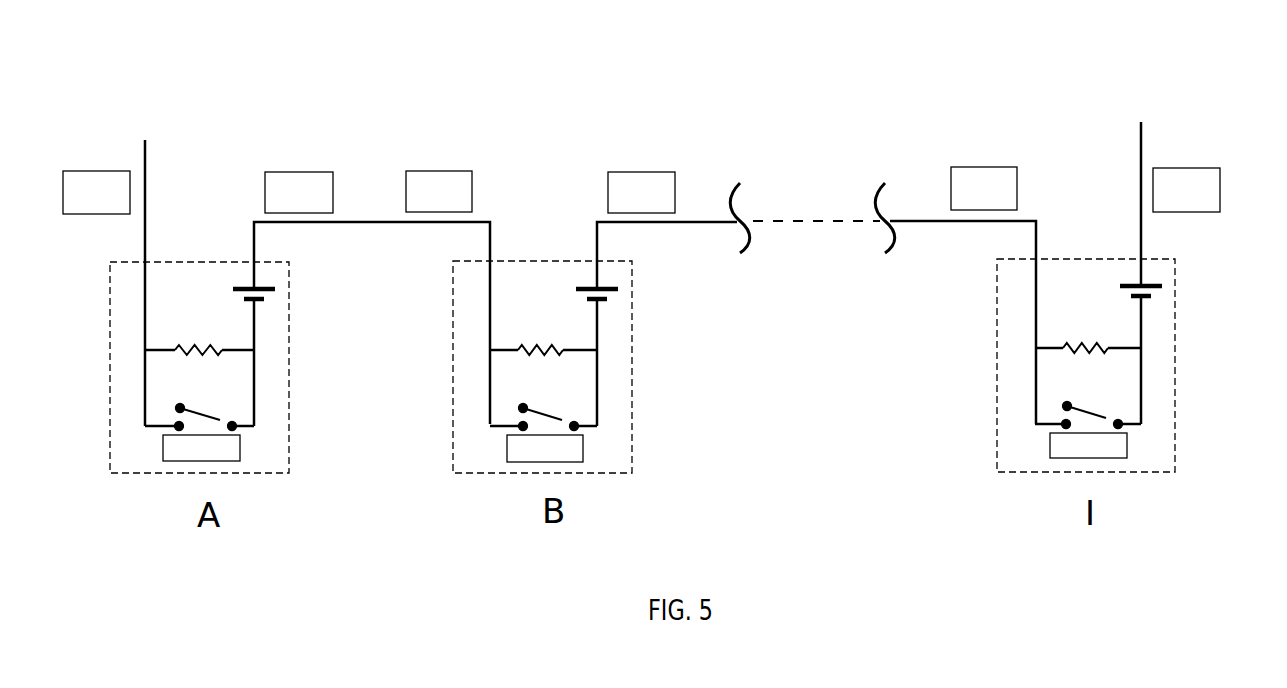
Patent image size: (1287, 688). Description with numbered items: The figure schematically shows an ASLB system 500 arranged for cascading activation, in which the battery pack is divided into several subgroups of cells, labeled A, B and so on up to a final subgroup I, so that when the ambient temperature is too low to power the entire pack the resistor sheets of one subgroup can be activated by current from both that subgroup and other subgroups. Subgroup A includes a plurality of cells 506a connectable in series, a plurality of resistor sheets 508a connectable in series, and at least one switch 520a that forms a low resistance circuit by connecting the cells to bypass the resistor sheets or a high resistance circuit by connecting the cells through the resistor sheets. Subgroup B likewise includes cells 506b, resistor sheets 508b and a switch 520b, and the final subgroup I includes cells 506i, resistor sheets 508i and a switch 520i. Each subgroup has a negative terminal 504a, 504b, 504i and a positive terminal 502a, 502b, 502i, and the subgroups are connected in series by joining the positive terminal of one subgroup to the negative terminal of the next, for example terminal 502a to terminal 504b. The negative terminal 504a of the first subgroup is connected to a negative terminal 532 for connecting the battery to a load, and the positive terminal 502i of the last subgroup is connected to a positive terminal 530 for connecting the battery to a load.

The ASLB system 500 is at (430, 85).
The positive terminal of subgroup A 502a is at (298, 175).
The negative terminal of subgroup A 504a is at (138, 192).
The cells of subgroup A 506a is at (265, 282).
The resistor sheets of subgroup A 508a is at (200, 345).
The switch of subgroup A 520a is at (218, 418).
The positive terminal of subgroup B 502b is at (641, 174).
The negative terminal of subgroup B 504b is at (439, 174).
The cells of subgroup B 506b is at (608, 278).
The resistor sheets of subgroup B 508b is at (547, 345).
The switch of subgroup B 520b is at (563, 416).
The positive terminal of subgroup I 502i is at (1186, 174).
The negative terminal of subgroup I 504i is at (984, 173).
The cells of subgroup I 506i is at (1153, 281).
The resistor sheets of subgroup I 508i is at (1090, 340).
The switch of subgroup I 520i is at (1105, 417).
The positive terminal 530 is at (1146, 186).
The negative terminal 532 is at (138, 269).